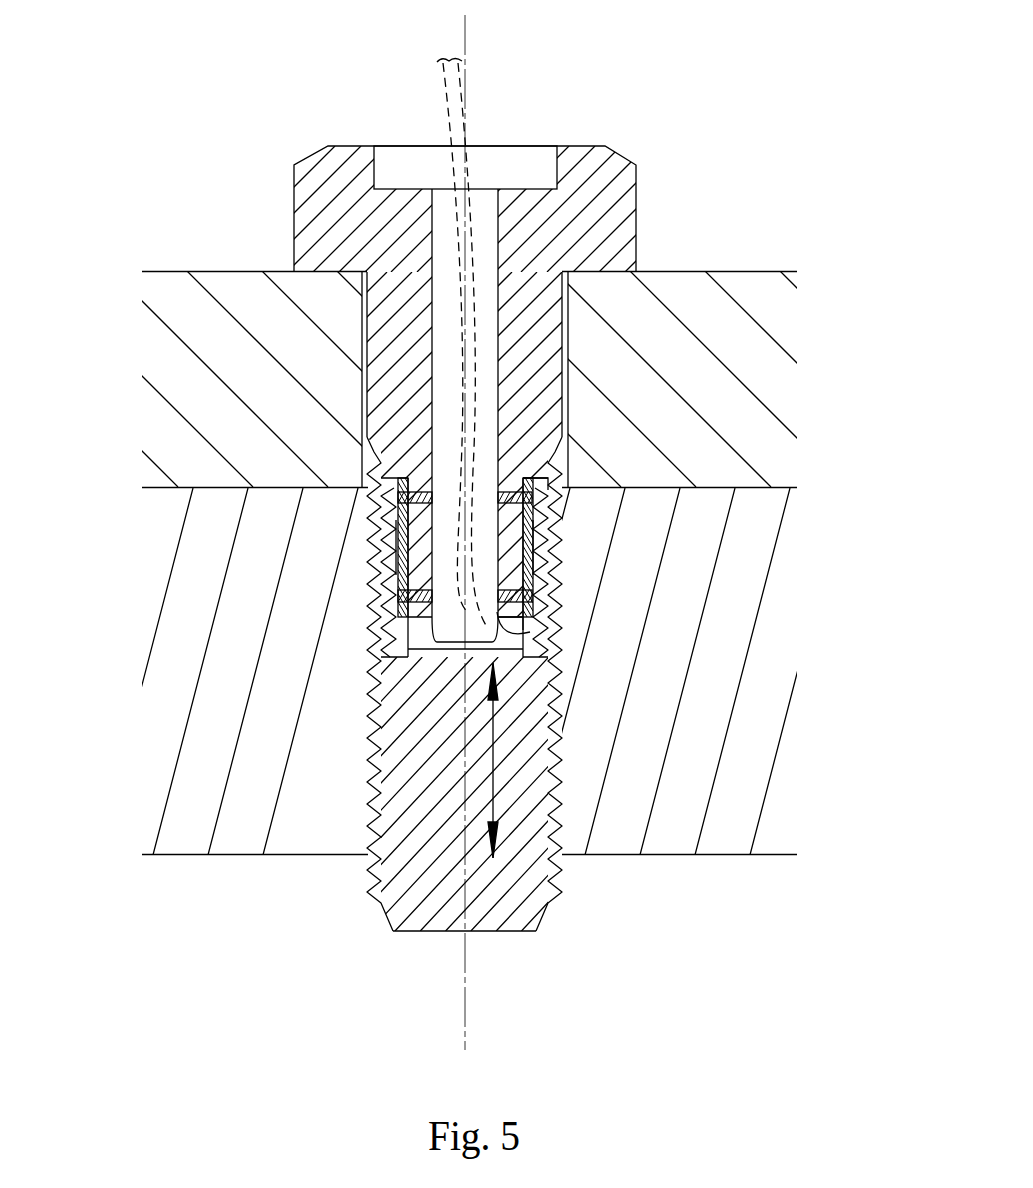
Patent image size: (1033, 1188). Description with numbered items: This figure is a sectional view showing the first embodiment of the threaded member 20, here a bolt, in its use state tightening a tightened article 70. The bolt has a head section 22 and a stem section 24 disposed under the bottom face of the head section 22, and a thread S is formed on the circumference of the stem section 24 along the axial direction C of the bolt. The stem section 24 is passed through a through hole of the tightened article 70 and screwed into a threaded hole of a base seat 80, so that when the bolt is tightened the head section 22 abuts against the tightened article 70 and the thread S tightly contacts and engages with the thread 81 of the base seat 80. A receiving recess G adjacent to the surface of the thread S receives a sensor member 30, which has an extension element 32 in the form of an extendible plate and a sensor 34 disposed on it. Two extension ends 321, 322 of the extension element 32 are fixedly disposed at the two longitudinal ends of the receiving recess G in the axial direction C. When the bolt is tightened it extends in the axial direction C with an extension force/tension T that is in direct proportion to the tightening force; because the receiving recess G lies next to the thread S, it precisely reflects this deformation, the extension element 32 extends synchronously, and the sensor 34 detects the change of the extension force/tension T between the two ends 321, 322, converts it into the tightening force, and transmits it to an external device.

The threaded member 20 is at (443, 383).
The head section 22 is at (315, 187).
The stem section 24 is at (400, 332).
The sensor member 30 is at (468, 581).
The extension element 32 is at (396, 510).
The extension end 321 is at (553, 488).
The extension end 322 is at (527, 614).
The sensor 34 is at (396, 578).
The tightened article 70 is at (751, 292).
The base seat 80 is at (728, 838).
The thread of the base seat 81 is at (393, 927).
The axial direction C is at (465, 43).
The receiving recess G is at (395, 640).
The thread S is at (373, 765).
The extension force/tension T is at (508, 760).